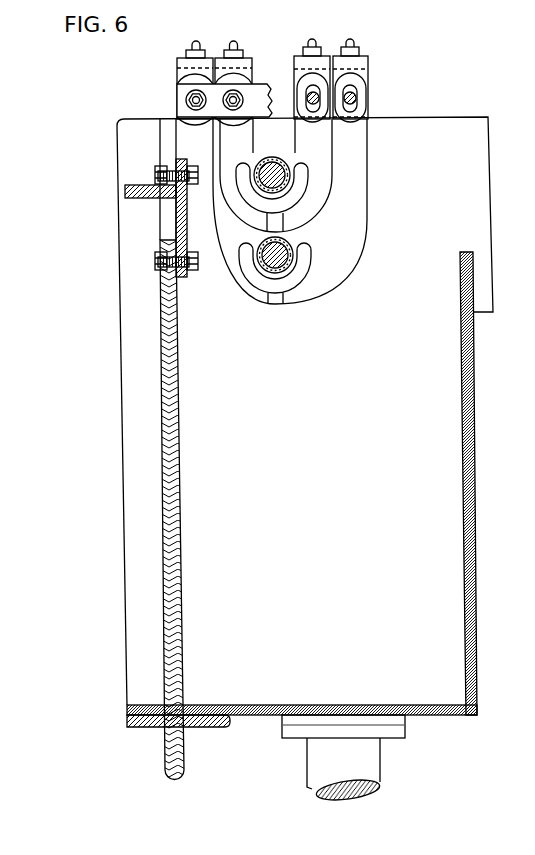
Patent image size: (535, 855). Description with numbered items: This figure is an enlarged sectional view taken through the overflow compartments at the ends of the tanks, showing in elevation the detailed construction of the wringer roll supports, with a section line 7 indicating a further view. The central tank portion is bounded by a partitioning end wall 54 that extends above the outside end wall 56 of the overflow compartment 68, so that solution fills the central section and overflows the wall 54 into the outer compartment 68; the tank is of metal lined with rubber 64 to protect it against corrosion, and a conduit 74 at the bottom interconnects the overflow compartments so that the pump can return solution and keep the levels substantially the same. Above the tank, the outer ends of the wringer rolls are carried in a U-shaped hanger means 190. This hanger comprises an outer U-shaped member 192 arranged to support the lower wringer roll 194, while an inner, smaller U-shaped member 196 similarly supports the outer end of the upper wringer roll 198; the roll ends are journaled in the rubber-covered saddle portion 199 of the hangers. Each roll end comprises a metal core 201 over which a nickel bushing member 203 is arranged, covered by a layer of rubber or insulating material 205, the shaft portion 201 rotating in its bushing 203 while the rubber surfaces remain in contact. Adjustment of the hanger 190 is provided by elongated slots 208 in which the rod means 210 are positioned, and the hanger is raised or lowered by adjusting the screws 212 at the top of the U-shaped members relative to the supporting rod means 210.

The section line 7- 7 is at (298, 18).
The partitioning end wall 54 is at (175, 493).
The outside end wall 56 is at (474, 544).
The rubber lining 64 is at (167, 557).
The overflow compartment 68 is at (340, 534).
The conduit 74 is at (371, 765).
The U-shaped hanger means 190 is at (375, 100).
The outer U-shaped member 192 is at (343, 252).
The lower wringer roll 194 is at (257, 251).
The inner U-shaped member 196 is at (320, 167).
The upper wringer roll 198 is at (290, 183).
The saddle portion 199 is at (292, 283).
The metal core 201 is at (286, 168).
The nickel bushing member 203 is at (273, 156).
The layer of rubber or insulating material 205 is at (260, 161).
The elongated slot 208 is at (312, 88).
The rod means 210 is at (356, 92).
The screw 212 is at (240, 42).